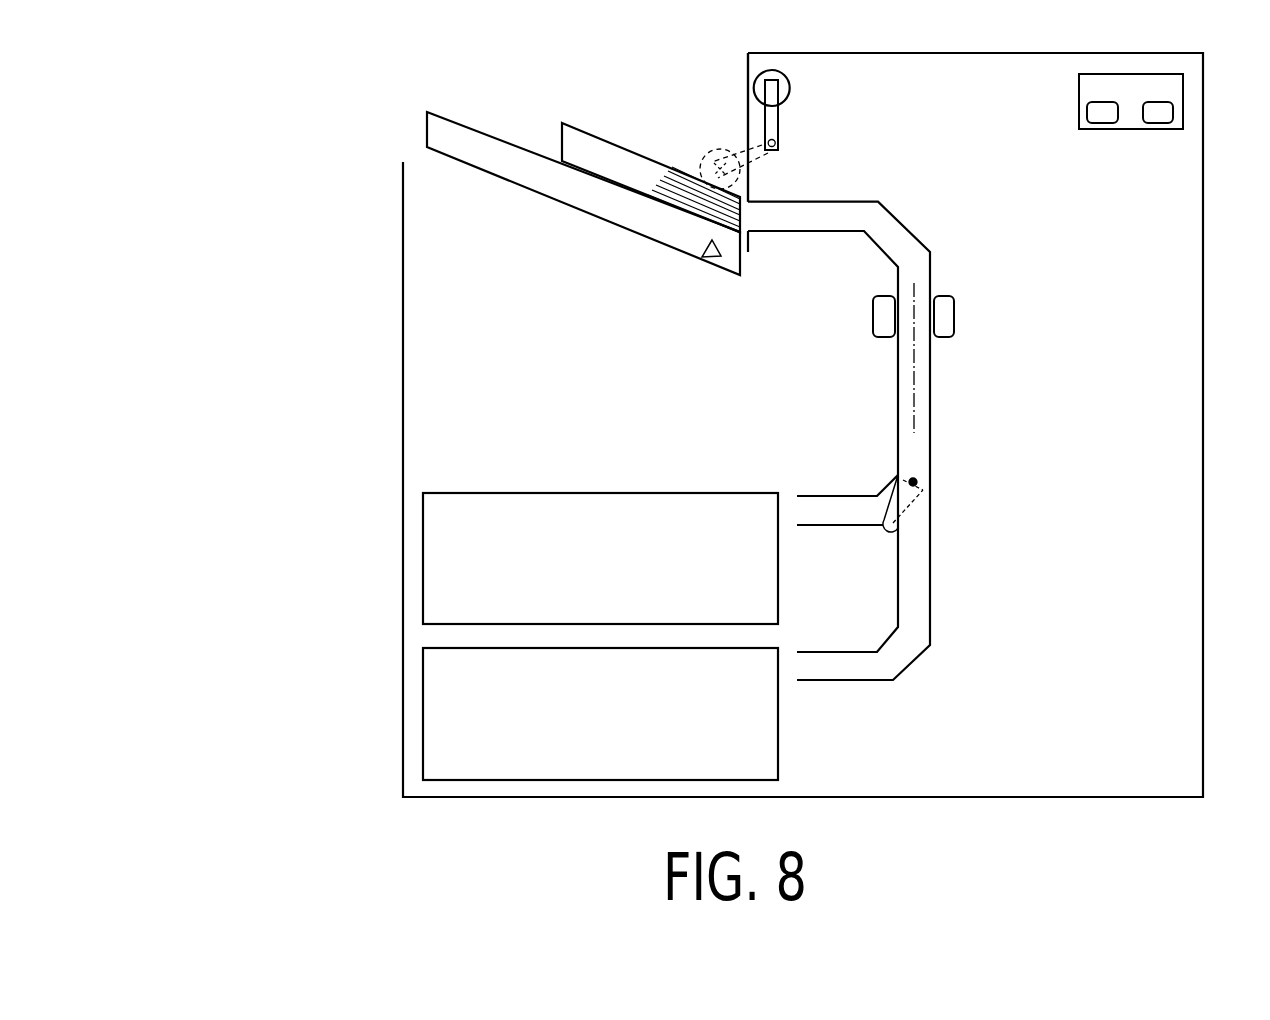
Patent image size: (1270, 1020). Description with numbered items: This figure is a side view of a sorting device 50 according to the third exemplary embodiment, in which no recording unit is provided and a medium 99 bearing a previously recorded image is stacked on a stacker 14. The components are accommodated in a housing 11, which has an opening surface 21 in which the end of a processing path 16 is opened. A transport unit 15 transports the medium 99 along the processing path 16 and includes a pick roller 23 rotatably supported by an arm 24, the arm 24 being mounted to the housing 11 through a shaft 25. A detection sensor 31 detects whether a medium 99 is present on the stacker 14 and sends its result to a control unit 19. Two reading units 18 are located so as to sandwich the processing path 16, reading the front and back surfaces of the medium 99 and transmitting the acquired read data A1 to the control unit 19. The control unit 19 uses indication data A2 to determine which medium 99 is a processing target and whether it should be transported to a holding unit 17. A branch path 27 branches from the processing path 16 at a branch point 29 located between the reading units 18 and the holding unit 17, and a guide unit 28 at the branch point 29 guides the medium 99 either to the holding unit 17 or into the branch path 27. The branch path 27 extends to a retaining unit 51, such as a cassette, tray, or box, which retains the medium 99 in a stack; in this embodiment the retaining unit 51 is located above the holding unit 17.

The sorting device 50 is at (250, 72).
The housing 11 is at (1205, 343).
The stacker 14 is at (427, 127).
The transport unit 15 is at (868, 104).
The processing path 16 is at (906, 225).
The holding unit 17 is at (423, 708).
The reading unit 18 is at (872, 316).
The control unit 19 is at (1079, 92).
The opening surface 21 is at (747, 65).
The pick roller 23 is at (792, 80).
The arm 24 is at (780, 112).
The shaft 25 is at (777, 141).
The branch path 27 is at (835, 495).
The guide unit 28 is at (893, 532).
The branch point 29 is at (910, 478).
The detection sensor 31 is at (722, 251).
The retaining unit 51 is at (423, 552).
The medium 99 is at (562, 140).
The read data A1 is at (1101, 124).
The indication data A2 is at (1157, 124).